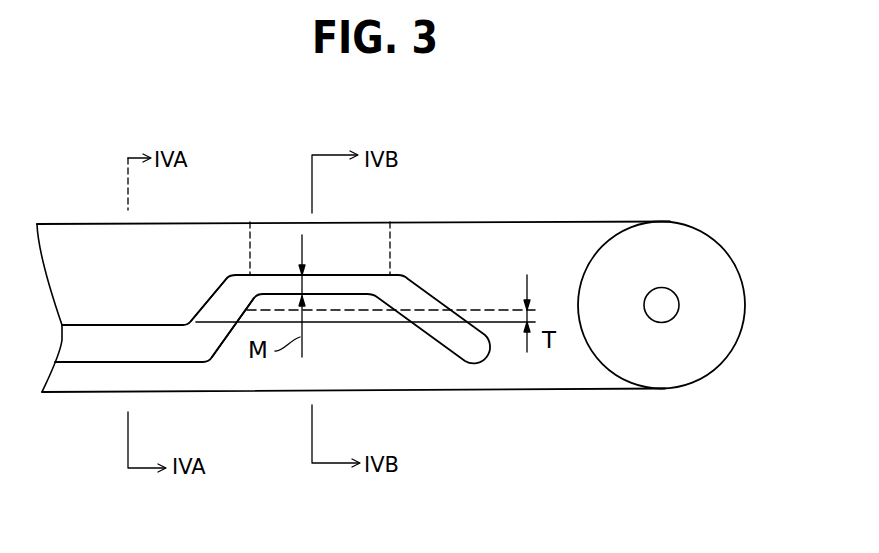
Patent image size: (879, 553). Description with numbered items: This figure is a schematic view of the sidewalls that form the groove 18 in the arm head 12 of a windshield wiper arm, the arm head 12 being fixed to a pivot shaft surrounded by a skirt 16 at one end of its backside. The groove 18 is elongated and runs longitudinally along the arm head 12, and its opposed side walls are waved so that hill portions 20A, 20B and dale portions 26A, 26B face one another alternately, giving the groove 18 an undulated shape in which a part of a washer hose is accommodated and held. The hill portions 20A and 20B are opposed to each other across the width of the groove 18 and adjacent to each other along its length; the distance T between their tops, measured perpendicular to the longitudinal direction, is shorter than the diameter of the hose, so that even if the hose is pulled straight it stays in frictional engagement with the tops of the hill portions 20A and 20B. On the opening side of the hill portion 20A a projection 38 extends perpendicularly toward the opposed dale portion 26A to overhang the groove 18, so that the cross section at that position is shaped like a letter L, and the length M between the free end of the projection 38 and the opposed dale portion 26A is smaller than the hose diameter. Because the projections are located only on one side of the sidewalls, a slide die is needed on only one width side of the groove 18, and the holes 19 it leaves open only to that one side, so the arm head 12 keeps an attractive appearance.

The arm head 12 is at (508, 221).
The skirt 16 is at (733, 258).
The groove 18 is at (237, 303).
The holes 19 is at (252, 235).
The second hill portion 20A is at (312, 300).
The first hill portion 20B is at (127, 317).
The second dale portion 26A is at (283, 285).
The first dale portion 26B is at (134, 359).
The projection 38 is at (353, 302).